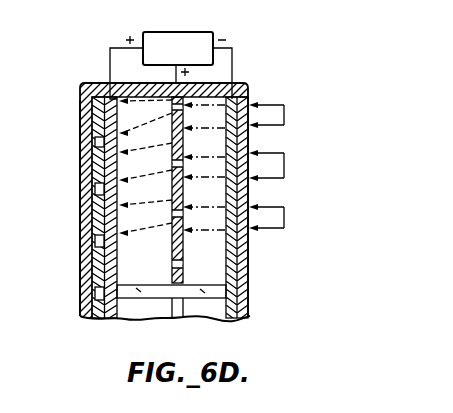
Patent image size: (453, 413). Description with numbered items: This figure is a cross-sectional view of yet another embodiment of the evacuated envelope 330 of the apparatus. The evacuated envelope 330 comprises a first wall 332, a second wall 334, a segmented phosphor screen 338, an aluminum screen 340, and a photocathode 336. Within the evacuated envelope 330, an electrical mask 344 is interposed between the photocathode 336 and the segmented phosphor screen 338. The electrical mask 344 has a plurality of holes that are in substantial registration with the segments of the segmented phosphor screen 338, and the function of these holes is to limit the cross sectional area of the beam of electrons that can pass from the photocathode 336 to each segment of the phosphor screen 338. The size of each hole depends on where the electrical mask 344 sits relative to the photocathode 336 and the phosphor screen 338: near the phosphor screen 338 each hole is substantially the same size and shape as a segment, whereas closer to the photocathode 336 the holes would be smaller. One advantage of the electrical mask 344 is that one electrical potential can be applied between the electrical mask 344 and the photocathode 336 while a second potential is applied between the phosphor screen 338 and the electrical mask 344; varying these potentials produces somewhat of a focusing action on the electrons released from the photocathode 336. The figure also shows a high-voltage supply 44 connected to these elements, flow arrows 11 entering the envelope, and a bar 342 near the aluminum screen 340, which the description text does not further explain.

The gas flow 11 is at (284, 115).
The high voltage power supply 44 is at (210, 32).
The evacuated envelope 330 is at (72, 230).
The first wall 332 is at (249, 292).
The second wall 334 is at (80, 309).
The photocathode 336 is at (233, 314).
The segmented phosphor screen 338 is at (101, 319).
The aluminum screen 340 is at (112, 319).
The support plate 342 is at (157, 292).
The electrical mask 344 is at (175, 283).